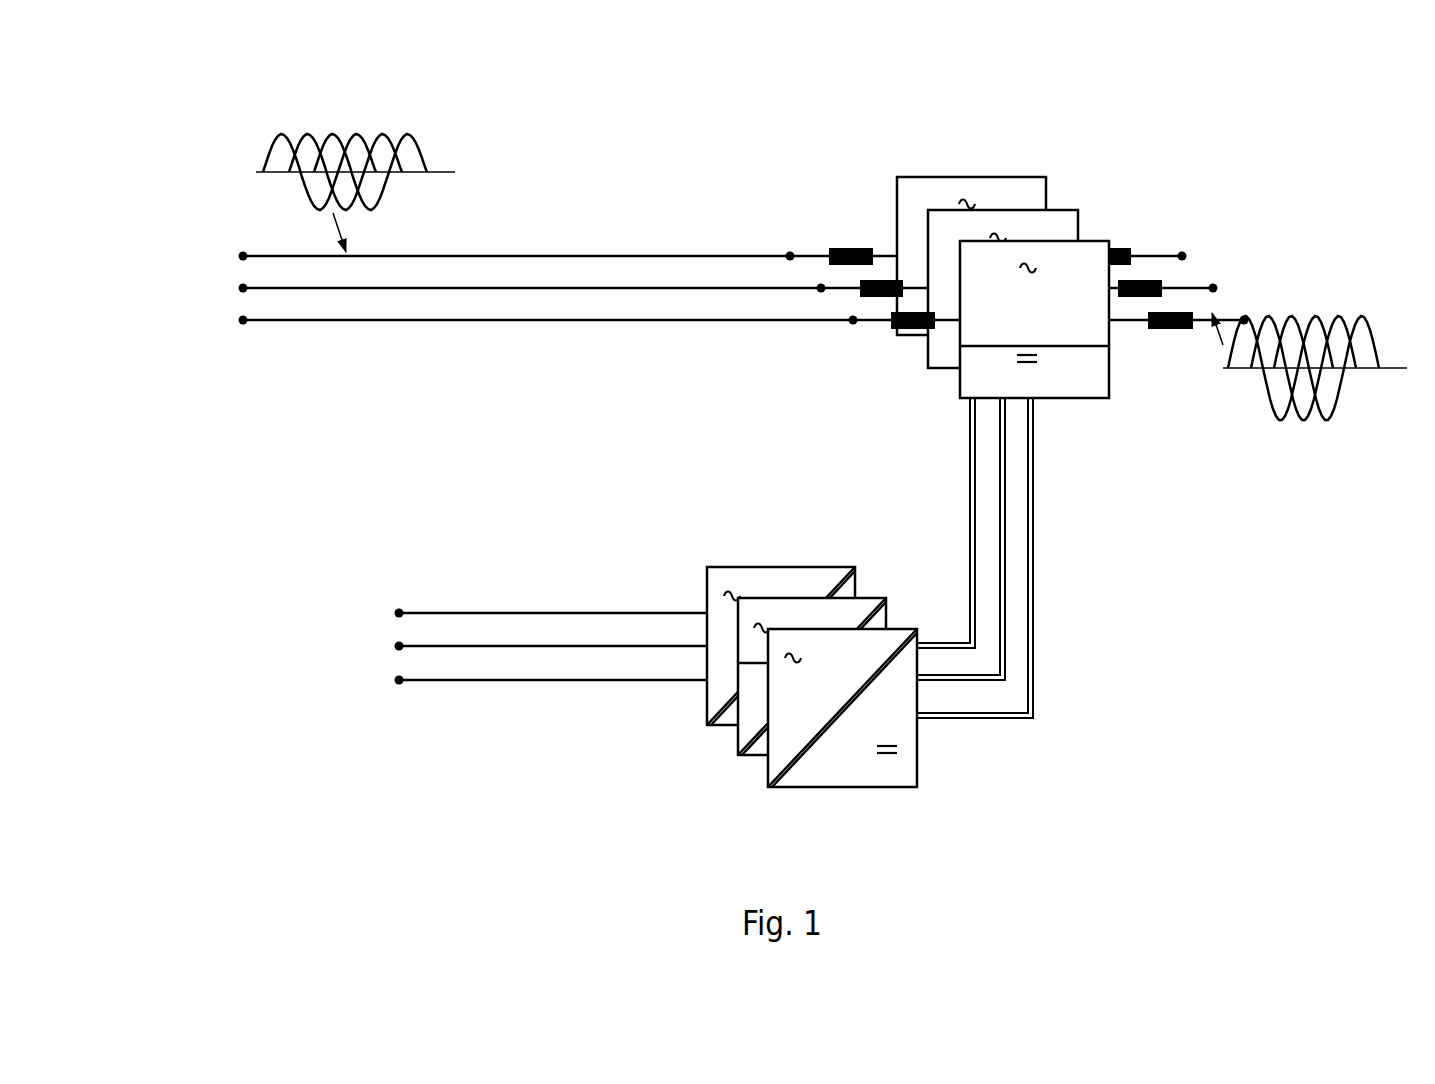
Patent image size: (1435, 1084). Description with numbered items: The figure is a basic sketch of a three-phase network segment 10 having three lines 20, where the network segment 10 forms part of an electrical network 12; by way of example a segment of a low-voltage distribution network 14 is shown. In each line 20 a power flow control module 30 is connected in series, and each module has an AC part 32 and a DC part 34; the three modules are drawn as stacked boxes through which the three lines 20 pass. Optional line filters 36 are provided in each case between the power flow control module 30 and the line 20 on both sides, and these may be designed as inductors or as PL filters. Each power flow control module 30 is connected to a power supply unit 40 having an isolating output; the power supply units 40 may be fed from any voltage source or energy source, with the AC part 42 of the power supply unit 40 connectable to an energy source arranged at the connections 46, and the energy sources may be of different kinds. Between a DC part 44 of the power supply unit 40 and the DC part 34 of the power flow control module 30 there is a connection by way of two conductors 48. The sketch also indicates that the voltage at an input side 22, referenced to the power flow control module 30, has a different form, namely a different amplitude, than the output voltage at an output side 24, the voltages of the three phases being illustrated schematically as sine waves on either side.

The three-phase network segment 10 is at (652, 240).
The electrical network 12 is at (1268, 78).
The low-voltage distribution network 14 is at (1330, 78).
The line 20 is at (496, 285).
The input side 22 is at (222, 279).
The output side 24 is at (1225, 262).
The power flow control module 30 is at (992, 177).
The AC part 32 is at (1087, 240).
The DC part 34 is at (1092, 402).
The line filter 36 is at (880, 280).
The power supply unit 40 is at (742, 567).
The AC part 42 is at (705, 708).
The DC part 44 is at (875, 788).
The connection 46 is at (372, 658).
The conductor 48 is at (1033, 605).